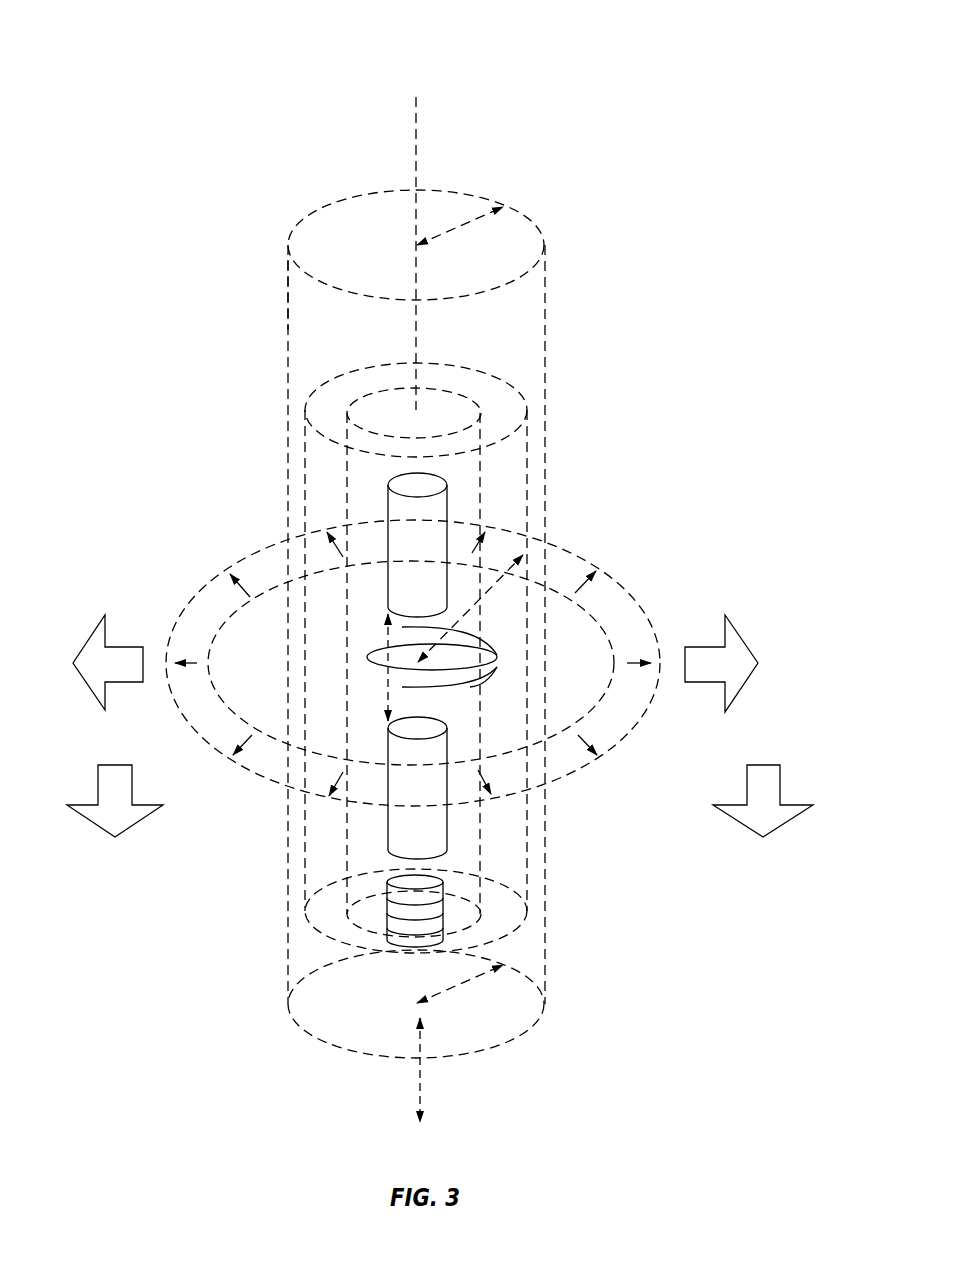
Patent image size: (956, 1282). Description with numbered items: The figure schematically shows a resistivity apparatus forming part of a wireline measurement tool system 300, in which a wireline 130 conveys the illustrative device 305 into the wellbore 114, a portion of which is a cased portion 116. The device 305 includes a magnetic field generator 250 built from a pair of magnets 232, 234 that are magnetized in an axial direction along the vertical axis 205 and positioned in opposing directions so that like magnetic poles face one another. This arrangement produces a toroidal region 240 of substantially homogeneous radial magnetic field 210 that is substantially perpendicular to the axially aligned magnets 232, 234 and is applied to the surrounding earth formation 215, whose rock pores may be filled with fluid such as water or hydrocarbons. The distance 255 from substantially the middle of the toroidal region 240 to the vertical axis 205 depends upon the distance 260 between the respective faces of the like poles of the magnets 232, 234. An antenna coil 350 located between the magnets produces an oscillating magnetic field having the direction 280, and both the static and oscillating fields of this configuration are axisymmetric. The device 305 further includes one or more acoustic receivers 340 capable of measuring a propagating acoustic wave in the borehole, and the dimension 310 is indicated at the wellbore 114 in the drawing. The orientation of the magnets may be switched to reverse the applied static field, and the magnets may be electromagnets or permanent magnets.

The wireline measurement tool system 300 is at (113, 48).
The wireline 130 is at (415, 117).
The wellbore 114 is at (462, 165).
The cased portion 116 is at (258, 292).
The inner radius r_ID 310 is at (452, 232).
The magnetic field generator 250 is at (205, 377).
The device 305 is at (440, 385).
The earth formation 215 is at (690, 407).
The magnet 232 is at (388, 537).
The magnet 234 is at (388, 795).
The distance between faces of like poles 260 is at (388, 680).
The distance from toroidal region to vertical axis 255 is at (477, 615).
The antenna coil 350 is at (487, 667).
The toroidal region 240 is at (573, 755).
The radial magnetic field 210 is at (230, 537).
The direction of oscillating magnetic field 280 is at (100, 758).
The acoustic receivers 340 is at (387, 900).
The vertical axis 205 is at (418, 1080).